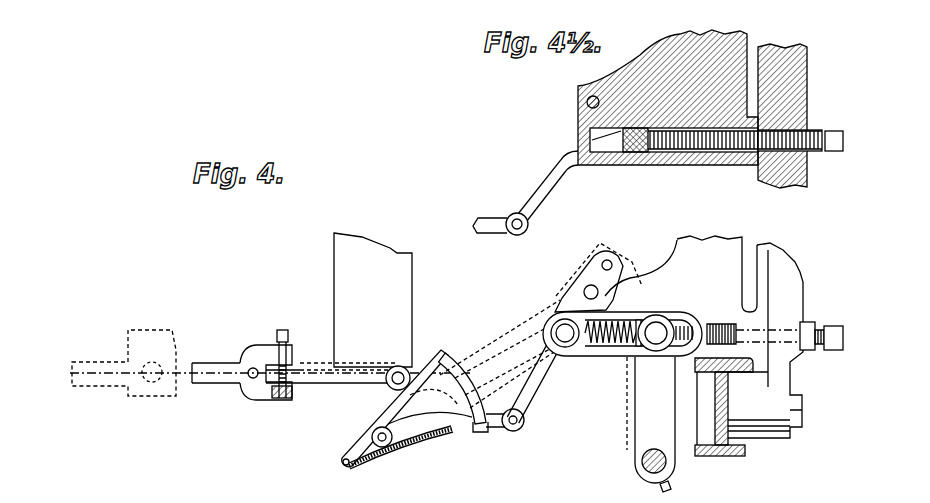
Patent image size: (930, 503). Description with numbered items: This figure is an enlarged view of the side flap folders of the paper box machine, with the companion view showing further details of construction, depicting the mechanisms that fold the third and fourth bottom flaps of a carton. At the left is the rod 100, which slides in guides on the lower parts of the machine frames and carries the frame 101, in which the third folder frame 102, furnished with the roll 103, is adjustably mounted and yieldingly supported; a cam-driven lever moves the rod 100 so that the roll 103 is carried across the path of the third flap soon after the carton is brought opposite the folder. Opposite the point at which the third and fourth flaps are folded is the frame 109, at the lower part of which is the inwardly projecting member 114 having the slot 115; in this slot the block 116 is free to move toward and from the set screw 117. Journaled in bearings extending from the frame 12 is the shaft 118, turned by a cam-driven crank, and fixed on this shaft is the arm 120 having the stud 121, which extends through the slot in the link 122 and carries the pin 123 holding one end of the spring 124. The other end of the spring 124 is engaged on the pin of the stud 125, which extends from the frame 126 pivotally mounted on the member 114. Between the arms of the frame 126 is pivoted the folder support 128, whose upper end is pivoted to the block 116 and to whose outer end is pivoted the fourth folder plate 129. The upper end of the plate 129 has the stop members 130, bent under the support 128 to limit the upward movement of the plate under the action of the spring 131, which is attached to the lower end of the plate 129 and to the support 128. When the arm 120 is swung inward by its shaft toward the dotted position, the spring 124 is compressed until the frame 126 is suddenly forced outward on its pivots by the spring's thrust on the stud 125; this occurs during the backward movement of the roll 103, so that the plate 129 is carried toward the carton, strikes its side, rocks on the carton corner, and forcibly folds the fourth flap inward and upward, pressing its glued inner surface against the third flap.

In FIG. 4, the frame 12 is at (746, 456).
In FIG. 4, the rod 100 is at (202, 383).
In FIG. 4, the frame 101 is at (268, 401).
In FIG. 4, the third folder frame 102 is at (178, 366).
In FIG. 4, the roll 103 is at (293, 385).
The frame 109 is at (804, 79).
In FIG. 4, the frame 109 is at (793, 269).
The inwardly projecting member 114 is at (641, 82).
In FIG. 4, the inwardly projecting member 114 is at (650, 273).
The slot 115 is at (718, 152).
In FIG. 4, the slot 115 is at (726, 322).
The block 116 is at (643, 152).
The set screw 117 is at (828, 152).
In FIG. 4, the set screw 117 is at (733, 329).
In FIG. 4, the shaft 118 is at (675, 463).
In FIG. 4, the arm 120 is at (640, 432).
In FIG. 4, the stud 121 is at (655, 341).
In FIG. 4, the link 122 is at (694, 314).
In FIG. 4, the pin 123 is at (631, 325).
In FIG. 4, the spring 124 is at (617, 346).
In FIG. 4, the stud 125 is at (560, 328).
In FIG. 4, the frame 126 is at (507, 340).
The support 128 is at (496, 235).
In FIG. 4, the support 128 is at (493, 432).
In FIG. 4, the fourth folder plate 129 is at (427, 363).
In FIG. 4, the stop members 130 is at (452, 368).
In FIG. 4, the spring 131 is at (380, 458).